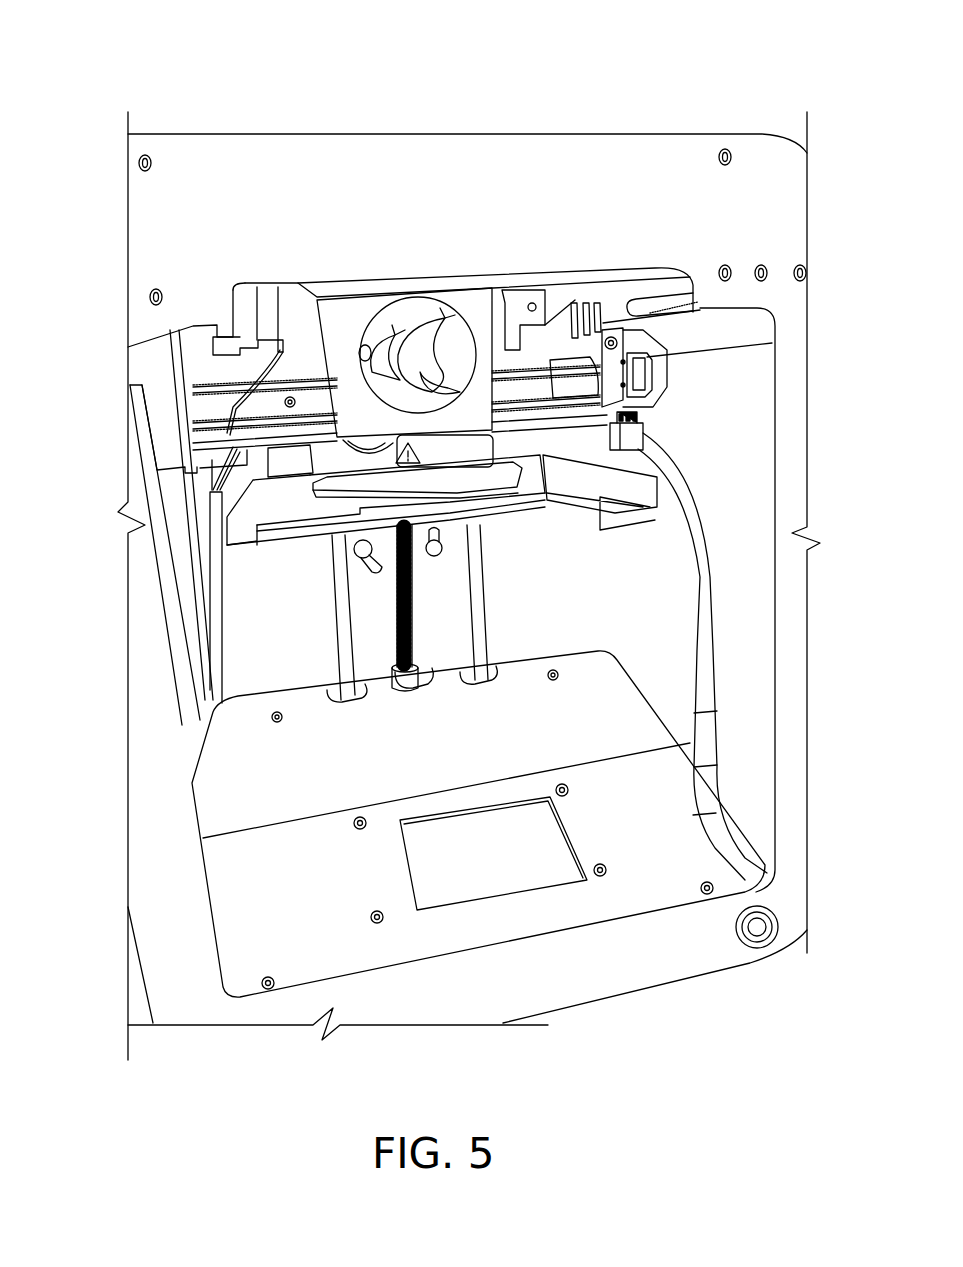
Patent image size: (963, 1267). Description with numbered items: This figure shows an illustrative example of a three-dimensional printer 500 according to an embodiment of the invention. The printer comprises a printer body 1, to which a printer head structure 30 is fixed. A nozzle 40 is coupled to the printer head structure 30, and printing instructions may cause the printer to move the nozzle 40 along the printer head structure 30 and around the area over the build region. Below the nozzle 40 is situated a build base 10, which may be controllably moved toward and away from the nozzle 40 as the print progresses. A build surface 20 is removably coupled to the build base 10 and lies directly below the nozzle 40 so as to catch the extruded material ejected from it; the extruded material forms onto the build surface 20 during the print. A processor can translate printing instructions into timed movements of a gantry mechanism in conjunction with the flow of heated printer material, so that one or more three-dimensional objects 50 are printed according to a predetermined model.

The 3D printing system 500 is at (110, 67).
The printer body 1 is at (792, 356).
The build base 10 is at (252, 553).
The build surface 20 is at (610, 513).
The printer head structure 30 is at (212, 487).
The nozzle 40 is at (470, 445).
The three-dimensional object 50 is at (400, 484).